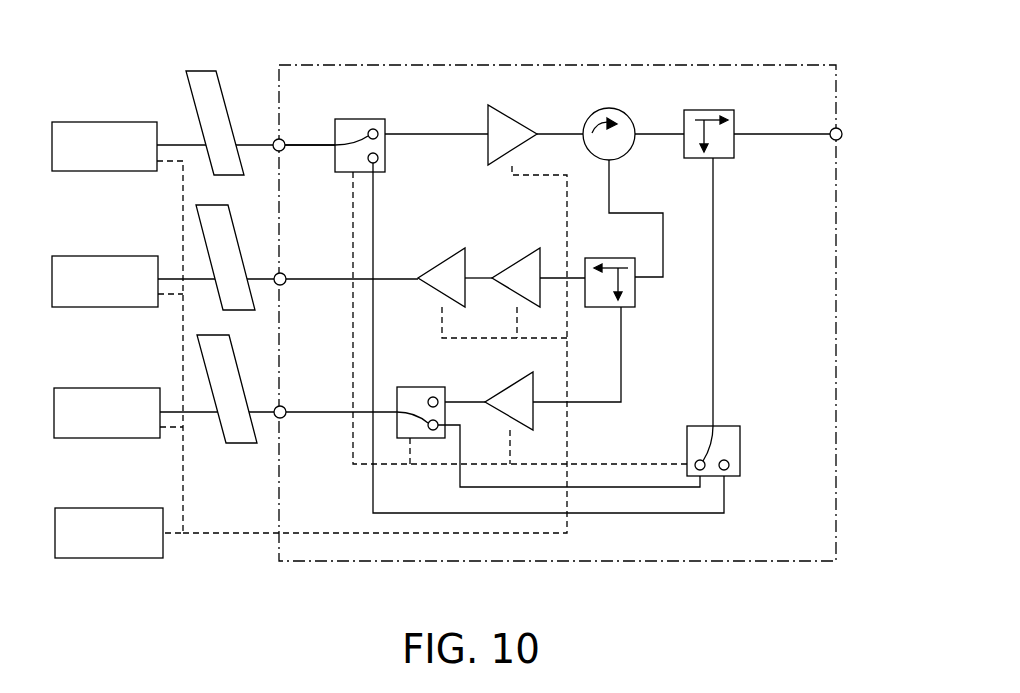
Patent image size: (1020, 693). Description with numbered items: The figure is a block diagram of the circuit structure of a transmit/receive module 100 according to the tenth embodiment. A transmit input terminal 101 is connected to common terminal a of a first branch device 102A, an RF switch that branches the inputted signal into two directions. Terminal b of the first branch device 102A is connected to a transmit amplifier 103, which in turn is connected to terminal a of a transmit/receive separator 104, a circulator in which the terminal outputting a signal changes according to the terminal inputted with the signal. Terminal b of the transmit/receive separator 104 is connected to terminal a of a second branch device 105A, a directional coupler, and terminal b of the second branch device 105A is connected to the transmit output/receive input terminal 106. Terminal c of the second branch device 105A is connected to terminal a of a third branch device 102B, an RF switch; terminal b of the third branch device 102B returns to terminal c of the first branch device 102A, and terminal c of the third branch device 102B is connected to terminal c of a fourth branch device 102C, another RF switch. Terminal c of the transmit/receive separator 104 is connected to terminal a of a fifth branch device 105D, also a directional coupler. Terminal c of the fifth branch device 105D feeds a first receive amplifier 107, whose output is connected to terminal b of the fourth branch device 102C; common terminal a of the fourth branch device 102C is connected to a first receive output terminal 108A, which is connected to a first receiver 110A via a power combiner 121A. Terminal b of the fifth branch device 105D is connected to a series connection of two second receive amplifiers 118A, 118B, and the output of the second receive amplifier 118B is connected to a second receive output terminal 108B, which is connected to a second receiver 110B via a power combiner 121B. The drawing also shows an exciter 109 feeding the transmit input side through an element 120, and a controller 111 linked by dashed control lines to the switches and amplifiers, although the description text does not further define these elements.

The transmit/receive module 100 is at (428, 56).
The transmit input terminal 101 is at (282, 138).
The first branch device 102A is at (355, 119).
The third branch device 102B is at (695, 426).
The fourth branch device 102C is at (402, 387).
The transmit amplifier 103 is at (509, 116).
The transmit/receive separator 104 is at (625, 118).
The second branch device 105A is at (705, 110).
The fifth branch device 105D is at (603, 258).
The transmit output/receive input terminal 106 is at (841, 128).
The first receive amplifier 107 is at (514, 378).
The first receive output terminal 108A is at (283, 405).
The second receive output terminal 108B is at (283, 272).
The exciter 109 is at (105, 122).
The first receiver 110A is at (106, 388).
The second receiver 110B is at (106, 256).
The controller 111 is at (109, 508).
The second receive amplifier 118A is at (504, 255).
The second receive amplifier 118B is at (430, 255).
The filter 120 is at (207, 71).
The power combiner 121A is at (238, 445).
The power combiner 121B is at (258, 300).